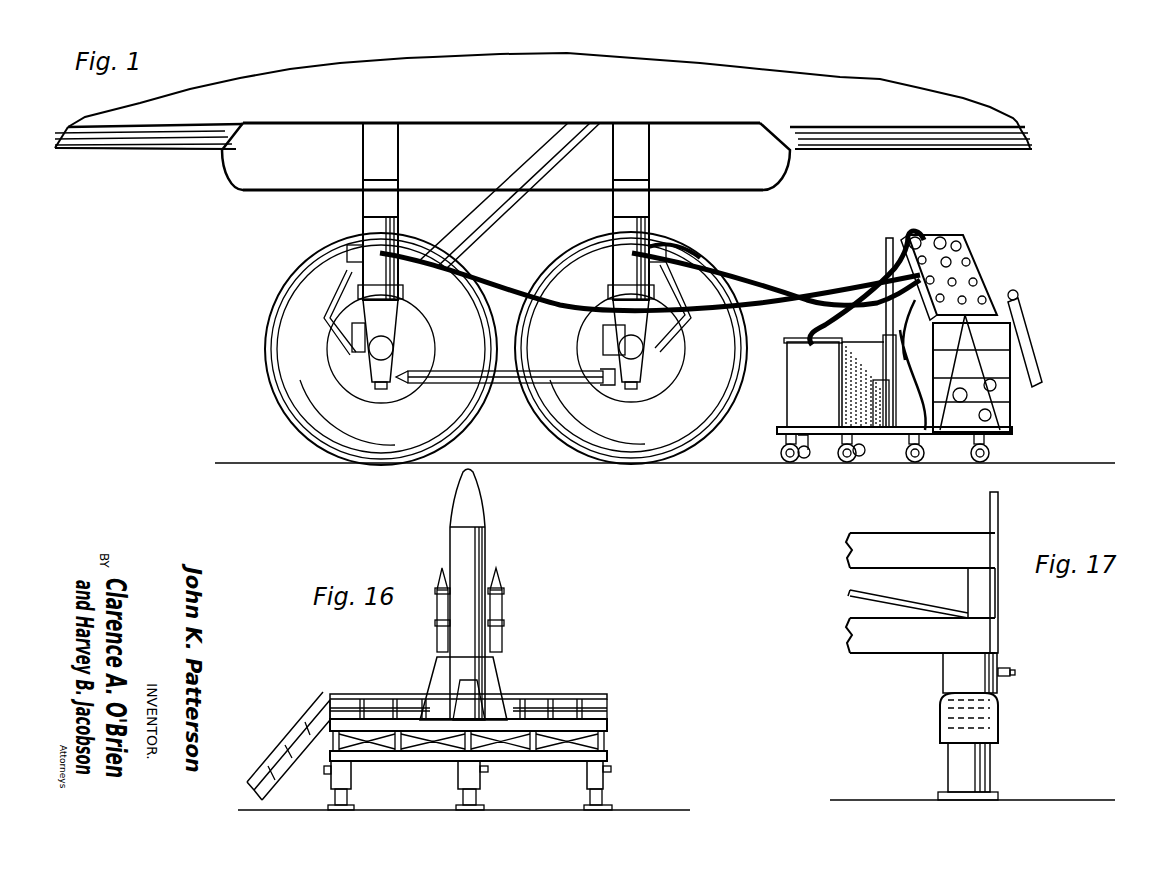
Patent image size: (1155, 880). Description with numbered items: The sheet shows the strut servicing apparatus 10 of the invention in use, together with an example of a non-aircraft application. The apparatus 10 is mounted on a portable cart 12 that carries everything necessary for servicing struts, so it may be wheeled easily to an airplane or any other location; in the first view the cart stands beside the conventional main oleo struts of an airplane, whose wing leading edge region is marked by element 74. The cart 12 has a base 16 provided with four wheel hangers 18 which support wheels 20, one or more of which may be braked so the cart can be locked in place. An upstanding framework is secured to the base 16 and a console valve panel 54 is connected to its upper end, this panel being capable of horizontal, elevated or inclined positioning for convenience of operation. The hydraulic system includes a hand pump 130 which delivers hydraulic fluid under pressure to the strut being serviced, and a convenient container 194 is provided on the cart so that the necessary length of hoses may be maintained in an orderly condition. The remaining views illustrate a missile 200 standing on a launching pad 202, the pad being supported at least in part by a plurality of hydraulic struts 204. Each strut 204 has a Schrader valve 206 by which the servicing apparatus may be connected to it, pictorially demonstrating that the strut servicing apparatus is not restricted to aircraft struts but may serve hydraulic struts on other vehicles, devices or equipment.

In FIG. 1, the strut servicing apparatus 10 is at (911, 359).
In FIG. 1, the portable cart 12 is at (832, 437).
In FIG. 1, the base 16 is at (787, 426).
In FIG. 1, the wheel hangers 18 is at (783, 446).
In FIG. 1, the wheels 20 is at (797, 458).
In FIG. 1, the console valve panel 54 is at (972, 254).
In FIG. 1, the wing leading edge slat 74 is at (138, 147).
In FIG. 1, the hand pump 130 is at (1038, 356).
In FIG. 1, the container 194 is at (808, 376).
In FIG. 16, the missile 200 is at (475, 562).
In FIG. 16, the launching pad 202 is at (533, 692).
In FIG. 17, the launching pad 202 is at (897, 640).
In FIG. 16, the struts 204 is at (602, 780).
In FIG. 17, the struts 204 is at (999, 722).
In FIG. 17, the Schrader valve 206 is at (1006, 668).